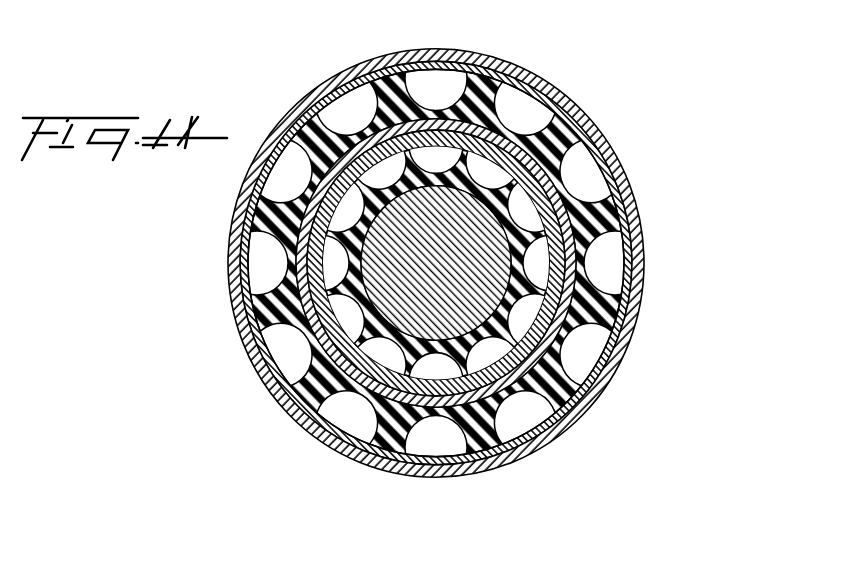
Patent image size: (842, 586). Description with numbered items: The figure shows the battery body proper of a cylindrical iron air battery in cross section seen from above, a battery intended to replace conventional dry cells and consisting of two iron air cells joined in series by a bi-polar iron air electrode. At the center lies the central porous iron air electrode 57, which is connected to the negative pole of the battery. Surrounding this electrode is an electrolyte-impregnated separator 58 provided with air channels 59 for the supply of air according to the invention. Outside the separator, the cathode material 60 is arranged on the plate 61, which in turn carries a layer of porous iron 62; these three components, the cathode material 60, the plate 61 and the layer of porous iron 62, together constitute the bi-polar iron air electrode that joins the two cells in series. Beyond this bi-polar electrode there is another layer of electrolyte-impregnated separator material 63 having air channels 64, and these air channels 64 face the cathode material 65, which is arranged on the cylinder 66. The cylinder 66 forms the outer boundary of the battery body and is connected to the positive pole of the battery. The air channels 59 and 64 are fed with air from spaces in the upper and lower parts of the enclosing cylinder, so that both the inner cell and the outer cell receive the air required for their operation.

The central porous iron air electrode 57 is at (390, 295).
The electrolyte-impregnated separator 58 is at (490, 445).
The air channels 59 is at (438, 162).
The cathode material 60 is at (612, 207).
The plate 61 is at (562, 333).
The layer of porous iron 62 is at (577, 377).
The electrolyte-impregnated separator material 63 is at (613, 315).
The air channels 64 is at (610, 258).
The cathode material 65 is at (617, 175).
The cylinder 66 is at (597, 122).